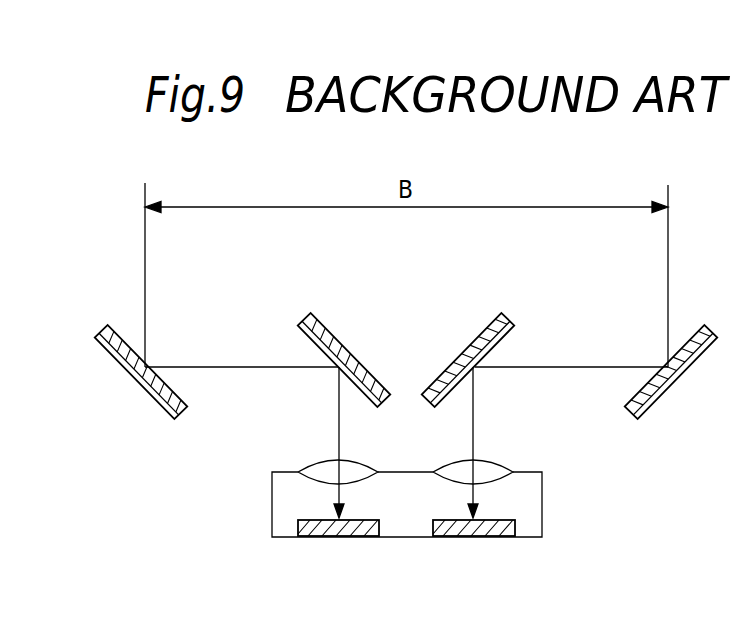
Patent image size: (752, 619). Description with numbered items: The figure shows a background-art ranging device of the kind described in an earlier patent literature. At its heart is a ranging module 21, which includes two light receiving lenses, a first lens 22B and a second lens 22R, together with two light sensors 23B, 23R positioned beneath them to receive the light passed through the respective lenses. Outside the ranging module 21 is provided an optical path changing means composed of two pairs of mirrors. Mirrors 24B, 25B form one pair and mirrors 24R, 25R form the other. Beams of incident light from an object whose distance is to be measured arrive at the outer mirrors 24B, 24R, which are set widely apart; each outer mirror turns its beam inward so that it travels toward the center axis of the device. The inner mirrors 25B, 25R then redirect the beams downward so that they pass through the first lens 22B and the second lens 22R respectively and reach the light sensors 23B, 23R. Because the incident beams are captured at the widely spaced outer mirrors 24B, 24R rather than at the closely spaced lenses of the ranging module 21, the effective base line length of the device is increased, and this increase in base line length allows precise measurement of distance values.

The ranging module 21 is at (272, 488).
The first lens 22B is at (318, 463).
The second lens 22R is at (498, 463).
The light sensor 23B is at (317, 538).
The light sensor 23R is at (500, 538).
The mirror 24B is at (135, 380).
The mirror 24R is at (673, 388).
The mirror 25B is at (365, 332).
The mirror 25R is at (475, 346).